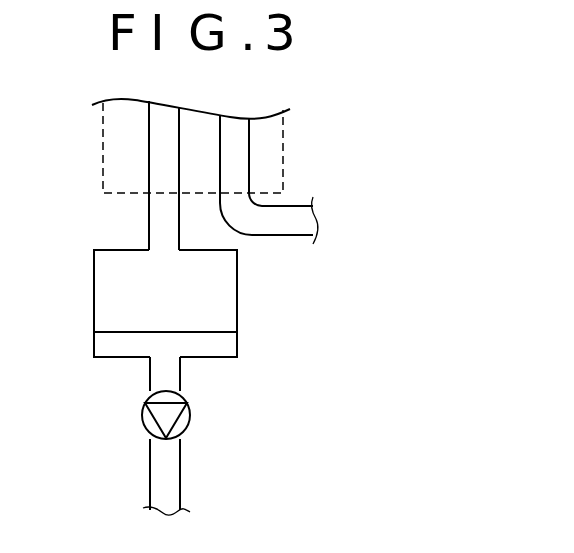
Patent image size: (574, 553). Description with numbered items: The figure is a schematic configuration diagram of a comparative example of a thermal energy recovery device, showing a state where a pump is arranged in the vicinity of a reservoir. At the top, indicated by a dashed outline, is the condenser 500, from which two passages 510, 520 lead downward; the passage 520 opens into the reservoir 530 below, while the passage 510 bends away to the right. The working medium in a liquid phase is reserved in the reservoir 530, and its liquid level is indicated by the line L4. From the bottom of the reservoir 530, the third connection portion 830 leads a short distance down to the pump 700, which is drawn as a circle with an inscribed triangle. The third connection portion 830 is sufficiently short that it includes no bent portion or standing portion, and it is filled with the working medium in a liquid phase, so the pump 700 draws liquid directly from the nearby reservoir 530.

The condenser 500 is at (284, 127).
The coolant passage 510 is at (237, 166).
The coolant passage 520 is at (160, 165).
The reservoir 530 is at (220, 283).
The liquid level L4 is at (215, 331).
The third connection portion 830 is at (230, 382).
The pump 700 is at (190, 412).